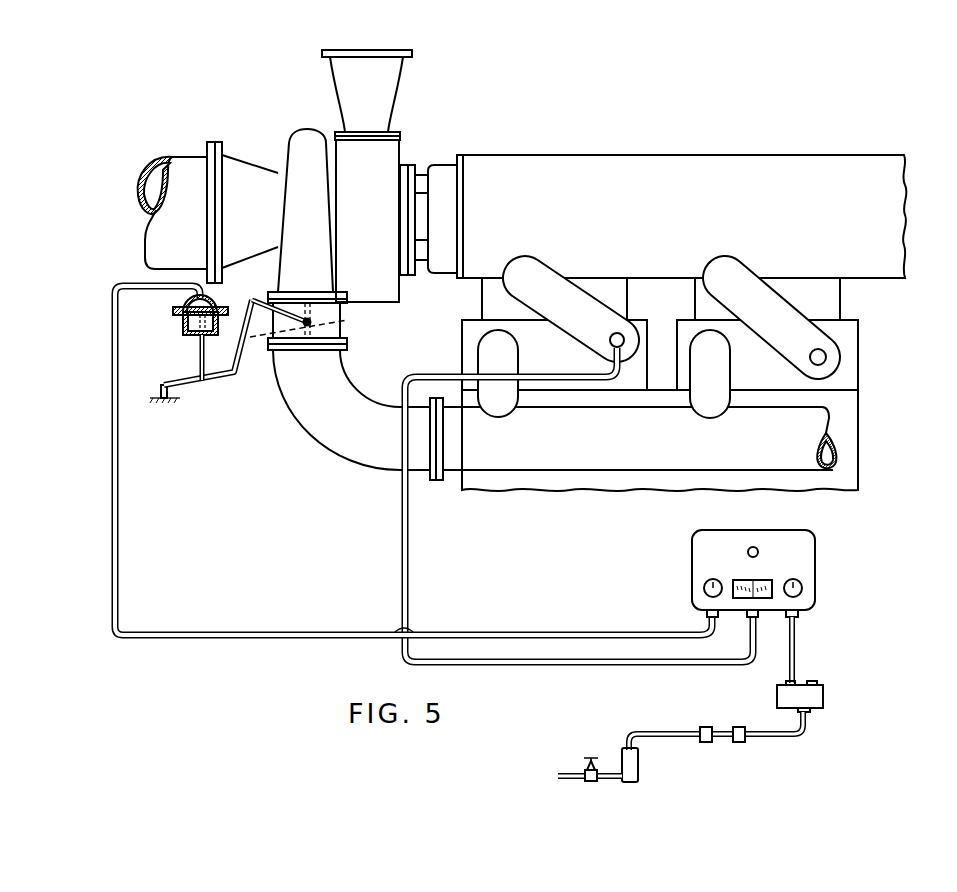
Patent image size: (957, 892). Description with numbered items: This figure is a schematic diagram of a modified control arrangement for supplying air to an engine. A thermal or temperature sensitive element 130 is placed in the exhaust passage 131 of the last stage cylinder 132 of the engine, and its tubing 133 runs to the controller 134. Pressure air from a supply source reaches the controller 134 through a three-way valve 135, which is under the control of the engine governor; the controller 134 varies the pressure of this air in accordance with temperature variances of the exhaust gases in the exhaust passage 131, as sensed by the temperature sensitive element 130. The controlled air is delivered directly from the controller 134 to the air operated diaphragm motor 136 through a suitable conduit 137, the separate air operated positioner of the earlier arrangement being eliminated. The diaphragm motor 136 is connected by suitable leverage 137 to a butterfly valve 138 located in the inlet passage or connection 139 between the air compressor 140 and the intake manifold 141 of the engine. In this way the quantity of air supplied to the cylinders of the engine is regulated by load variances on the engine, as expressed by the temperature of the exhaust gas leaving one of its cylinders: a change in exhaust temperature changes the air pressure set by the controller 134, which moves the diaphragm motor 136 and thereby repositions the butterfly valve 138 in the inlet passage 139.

The temperature sensitive element 130 is at (618, 334).
The exhaust passage 131 is at (578, 322).
The last stage cylinder 132 is at (625, 380).
The tubing 133 is at (409, 520).
The controller 134 is at (805, 566).
The three-way valve 135 is at (810, 694).
The diaphragm motor 136 is at (182, 331).
The conduit and leverage 137 is at (248, 358).
The butterfly valve 138 is at (347, 321).
The inlet passage 139 is at (331, 431).
The air compressor 140 is at (303, 150).
The intake manifold 141 is at (808, 428).